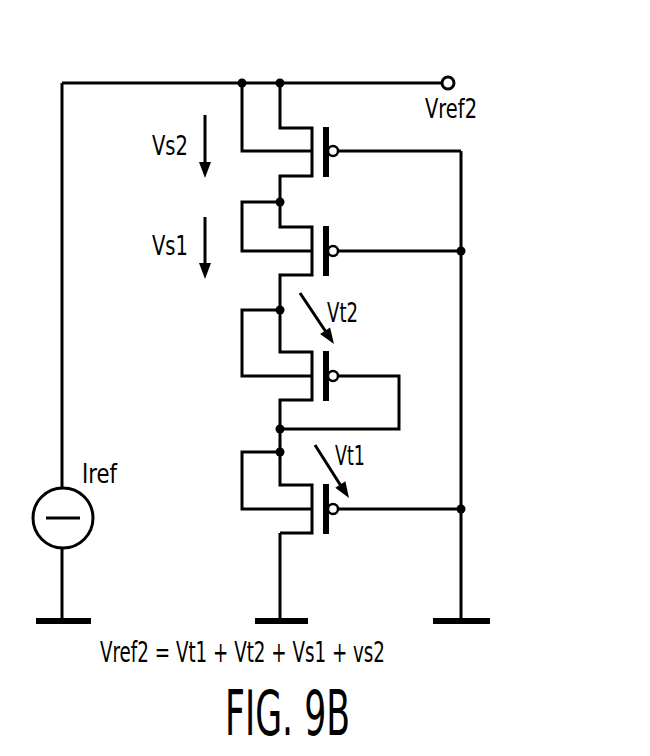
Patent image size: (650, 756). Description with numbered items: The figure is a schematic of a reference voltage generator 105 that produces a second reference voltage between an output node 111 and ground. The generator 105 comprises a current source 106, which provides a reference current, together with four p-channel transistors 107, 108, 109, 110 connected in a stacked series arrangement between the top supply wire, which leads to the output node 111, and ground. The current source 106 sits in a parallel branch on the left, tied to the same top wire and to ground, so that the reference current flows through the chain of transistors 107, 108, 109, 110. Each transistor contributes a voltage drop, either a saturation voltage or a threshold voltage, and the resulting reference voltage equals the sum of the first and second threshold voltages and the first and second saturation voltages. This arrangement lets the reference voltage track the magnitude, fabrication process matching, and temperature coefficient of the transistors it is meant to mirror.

The reference voltage generator 105 is at (504, 513).
The current source 106 is at (93, 518).
The p-channel transistor 107 is at (337, 170).
The p-channel transistor 108 is at (335, 266).
The p-channel transistor 109 is at (345, 367).
The p-channel transistor 110 is at (334, 526).
The output node 111 is at (408, 83).